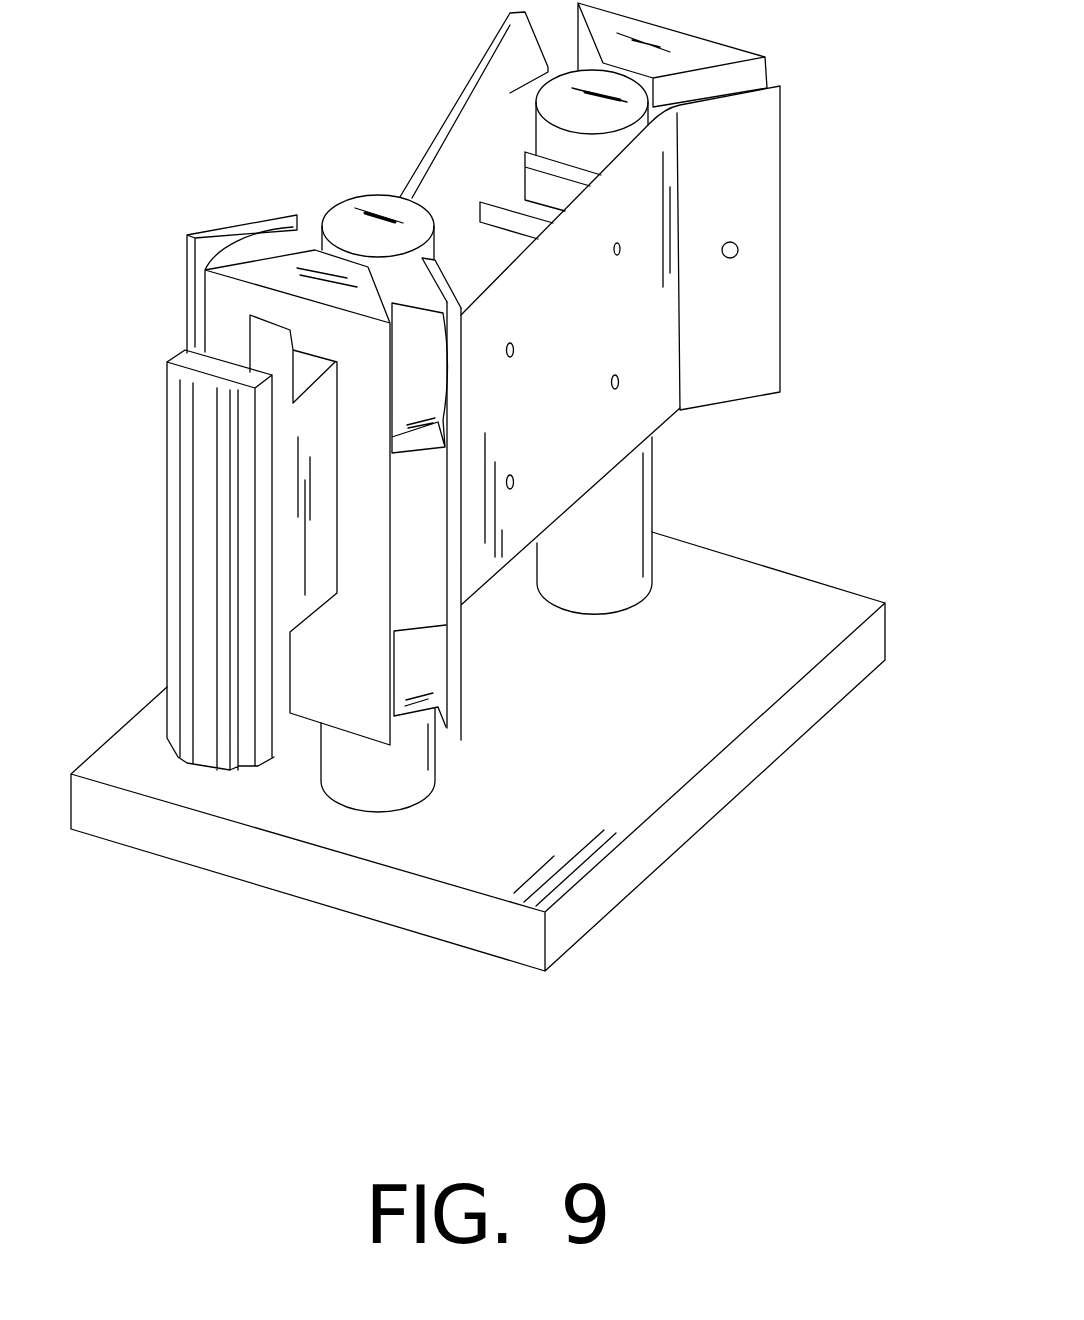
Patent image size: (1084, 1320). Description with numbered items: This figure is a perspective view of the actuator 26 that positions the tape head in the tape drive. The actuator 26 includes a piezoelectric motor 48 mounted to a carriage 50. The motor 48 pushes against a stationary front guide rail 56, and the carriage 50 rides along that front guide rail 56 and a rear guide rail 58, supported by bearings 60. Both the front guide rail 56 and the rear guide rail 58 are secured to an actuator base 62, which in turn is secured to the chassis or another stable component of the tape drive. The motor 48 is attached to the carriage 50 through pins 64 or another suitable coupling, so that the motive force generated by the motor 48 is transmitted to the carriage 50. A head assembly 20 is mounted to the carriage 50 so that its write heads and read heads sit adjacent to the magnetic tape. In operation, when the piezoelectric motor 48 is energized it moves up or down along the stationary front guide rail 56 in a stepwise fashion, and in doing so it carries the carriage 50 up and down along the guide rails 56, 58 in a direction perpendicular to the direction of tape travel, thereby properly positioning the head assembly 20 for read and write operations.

The head assembly 20 is at (205, 654).
The actuator 26 is at (850, 185).
The piezoelectric motor 48 is at (527, 199).
The carriage 50 is at (453, 140).
The front guide rail 56 is at (345, 215).
The rear guide rail 58 is at (562, 107).
The bearings 60 is at (253, 245).
The actuator base 62 is at (846, 605).
The pins 64 is at (483, 220).